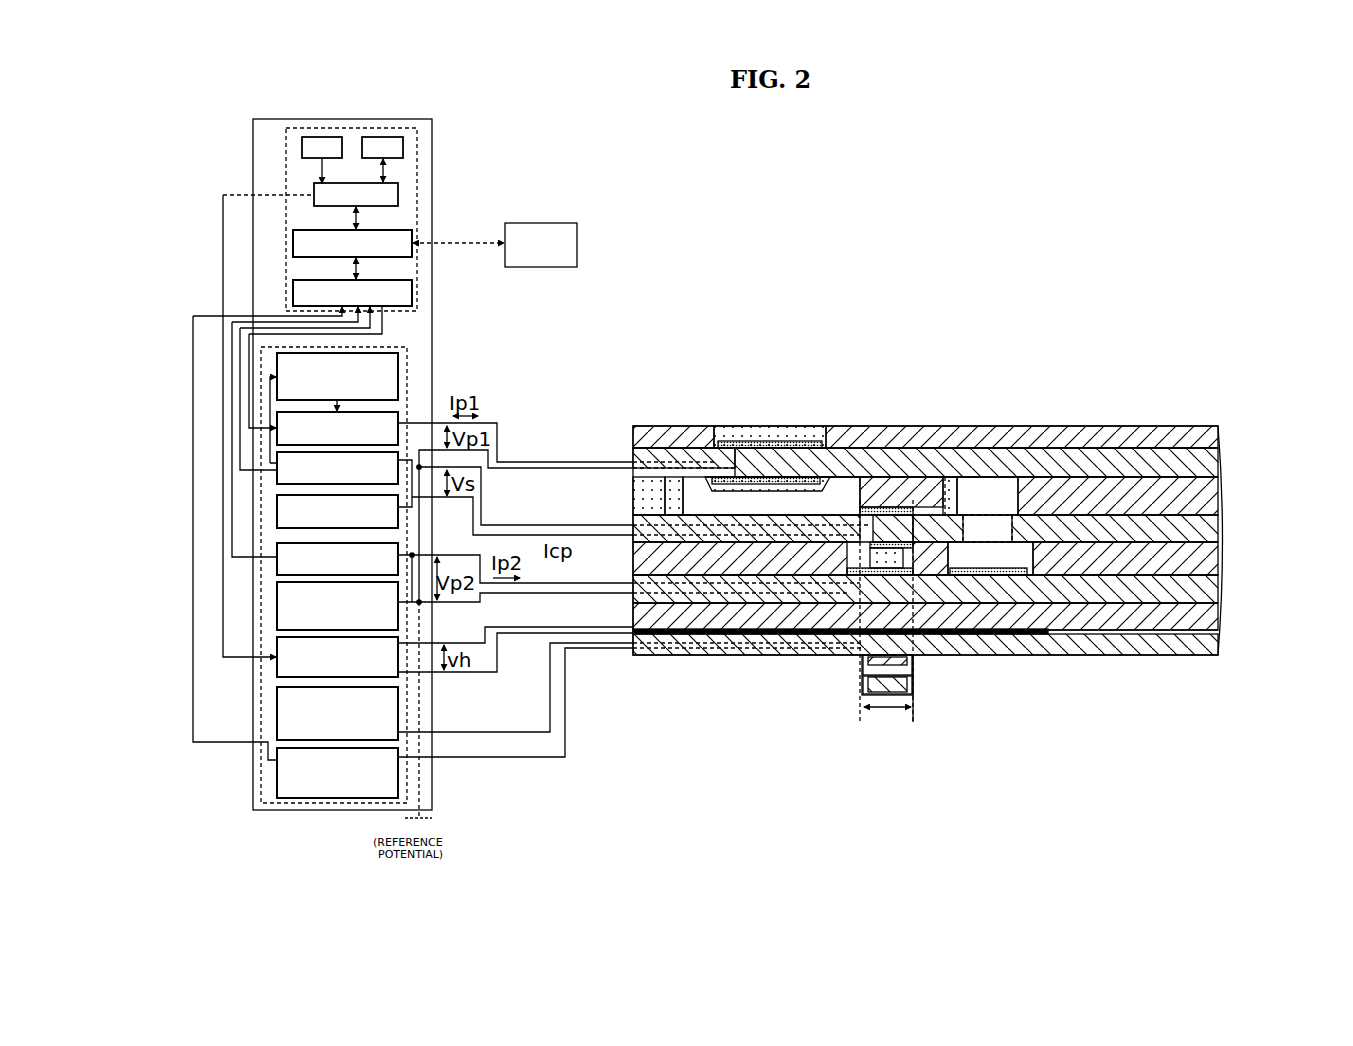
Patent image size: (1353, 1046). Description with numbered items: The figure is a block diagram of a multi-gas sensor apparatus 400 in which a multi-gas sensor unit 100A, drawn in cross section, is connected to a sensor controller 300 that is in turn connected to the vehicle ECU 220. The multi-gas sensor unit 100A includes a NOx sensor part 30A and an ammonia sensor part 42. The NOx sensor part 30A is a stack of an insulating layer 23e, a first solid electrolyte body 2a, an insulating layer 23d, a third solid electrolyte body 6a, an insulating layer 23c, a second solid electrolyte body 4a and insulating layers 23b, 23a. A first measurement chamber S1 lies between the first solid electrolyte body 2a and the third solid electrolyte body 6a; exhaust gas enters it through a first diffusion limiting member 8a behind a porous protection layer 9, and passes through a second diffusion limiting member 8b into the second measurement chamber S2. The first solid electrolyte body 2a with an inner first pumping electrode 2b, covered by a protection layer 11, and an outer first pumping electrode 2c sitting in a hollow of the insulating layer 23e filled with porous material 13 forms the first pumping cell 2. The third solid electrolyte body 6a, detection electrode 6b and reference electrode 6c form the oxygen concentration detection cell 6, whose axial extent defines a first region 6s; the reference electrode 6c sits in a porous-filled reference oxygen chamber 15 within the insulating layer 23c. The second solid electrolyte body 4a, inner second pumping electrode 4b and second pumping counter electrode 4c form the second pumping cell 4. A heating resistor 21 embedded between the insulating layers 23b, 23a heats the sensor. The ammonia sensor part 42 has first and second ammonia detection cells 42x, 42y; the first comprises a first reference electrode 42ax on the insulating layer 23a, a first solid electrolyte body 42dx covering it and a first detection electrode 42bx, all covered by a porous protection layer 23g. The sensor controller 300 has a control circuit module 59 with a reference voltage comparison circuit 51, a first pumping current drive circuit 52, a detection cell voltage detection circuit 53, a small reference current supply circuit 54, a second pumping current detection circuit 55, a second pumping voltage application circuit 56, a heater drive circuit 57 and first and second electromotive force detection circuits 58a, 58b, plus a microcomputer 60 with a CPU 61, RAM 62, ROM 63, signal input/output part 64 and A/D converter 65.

The sensor controller 300 is at (425, 100).
The microcomputer 60 is at (419, 161).
The CPU 61 is at (398, 195).
The RAM 62 is at (383, 137).
The ROM 63 is at (322, 137).
The signal input/output part 64 is at (412, 233).
The A/D converter 65 is at (412, 296).
The ECU 220 is at (543, 223).
The control circuit module 59 is at (405, 347).
The reference voltage comparison circuit 51 is at (398, 375).
The Ip1 drive circuit 52 is at (398, 420).
The Vs detection circuit 53 is at (400, 460).
The Icp supply circuit 54 is at (398, 513).
The Ip2 detection circuit 55 is at (398, 549).
The Vp2 application circuit 56 is at (398, 613).
The heater drive circuit 57 is at (398, 673).
The first electromotive force detection circuit 58a is at (398, 720).
The second electromotive force detection circuit 58b is at (334, 799).
The multi-gas sensor apparatus 400 is at (978, 135).
The multi-gas sensor unit 100A is at (1197, 313).
The NOx sensor part 30A is at (795, 248).
The first pumping cell 2 is at (710, 347).
The first solid electrolyte body 2a is at (700, 446).
The inner first pumping electrode 2b is at (660, 446).
The outer first pumping electrode 2c is at (718, 426).
The porous material 13 is at (775, 441).
The protection layer 9 is at (640, 490).
The first diffusion limiting member 8a is at (668, 500).
The second diffusion limiting member 8b is at (1000, 478).
The first measurement chamber S1 is at (736, 503).
The second measurement chamber S2 is at (1010, 552).
The protection layer 11 is at (868, 520).
The oxygen concentration detection cell 6 is at (1060, 332).
The third solid electrolyte body 6a is at (895, 545).
The detection electrode 6b is at (885, 508).
The reference electrode 6c is at (903, 572).
The first region 6s is at (887, 722).
The second pumping cell 4 is at (830, 736).
The second solid electrolyte body 4a is at (820, 560).
The inner second pumping electrode 4b is at (845, 590).
The second pumping counter electrode 4c is at (800, 528).
The reference oxygen chamber 15 is at (768, 560).
The heating resistor 21 is at (1032, 633).
The insulating layer 23a is at (1222, 650).
The insulating layer 23b is at (1222, 605).
The insulating layer 23c is at (1222, 552).
The insulating layer 23d is at (1222, 495).
The insulating layer 23e is at (1220, 437).
The protection layer 23g is at (915, 697).
The ammonia sensor part 42 is at (1125, 734).
The first ammonia detection cell 42x is at (1015, 698).
The second ammonia detection cell 42y is at (1106, 723).
The first reference electrode 42ax is at (905, 661).
The first detection electrode 42bx is at (913, 690).
The first solid electrolyte body 42dx is at (905, 672).